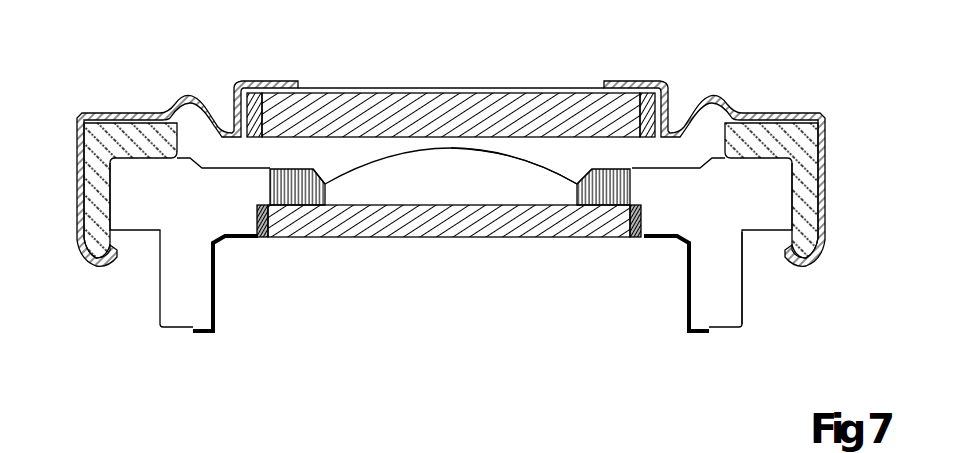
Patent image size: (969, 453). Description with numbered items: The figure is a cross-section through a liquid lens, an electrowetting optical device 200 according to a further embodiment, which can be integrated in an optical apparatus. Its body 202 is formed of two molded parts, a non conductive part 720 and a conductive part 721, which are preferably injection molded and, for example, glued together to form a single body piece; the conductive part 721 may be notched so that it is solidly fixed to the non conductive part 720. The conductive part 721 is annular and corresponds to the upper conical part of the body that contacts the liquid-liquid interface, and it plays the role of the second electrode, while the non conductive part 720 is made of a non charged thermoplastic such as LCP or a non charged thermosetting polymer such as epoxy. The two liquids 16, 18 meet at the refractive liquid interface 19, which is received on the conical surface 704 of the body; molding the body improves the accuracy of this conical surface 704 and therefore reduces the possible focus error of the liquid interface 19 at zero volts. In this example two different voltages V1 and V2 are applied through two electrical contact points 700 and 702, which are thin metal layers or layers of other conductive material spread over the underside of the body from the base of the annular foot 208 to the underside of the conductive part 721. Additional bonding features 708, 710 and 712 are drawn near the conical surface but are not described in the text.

The electrowetting optical device 200 is at (95, 62).
The body 202 is at (160, 288).
The annular foot 208 is at (220, 266).
The first liquid 16 is at (452, 178).
The second liquid 18 is at (512, 150).
The liquid interface 19 is at (443, 149).
The electrical contact point 700 is at (210, 334).
The electrical contact point 702 is at (695, 334).
The conical surface 704 is at (317, 173).
The second bond 708 is at (578, 183).
The first bond 710 is at (333, 182).
The second bonding pad 712 is at (593, 168).
The non conductive part 720 is at (687, 225).
The conductive part 721 is at (620, 193).
The first voltage V1 is at (192, 337).
The second voltage V2 is at (717, 334).